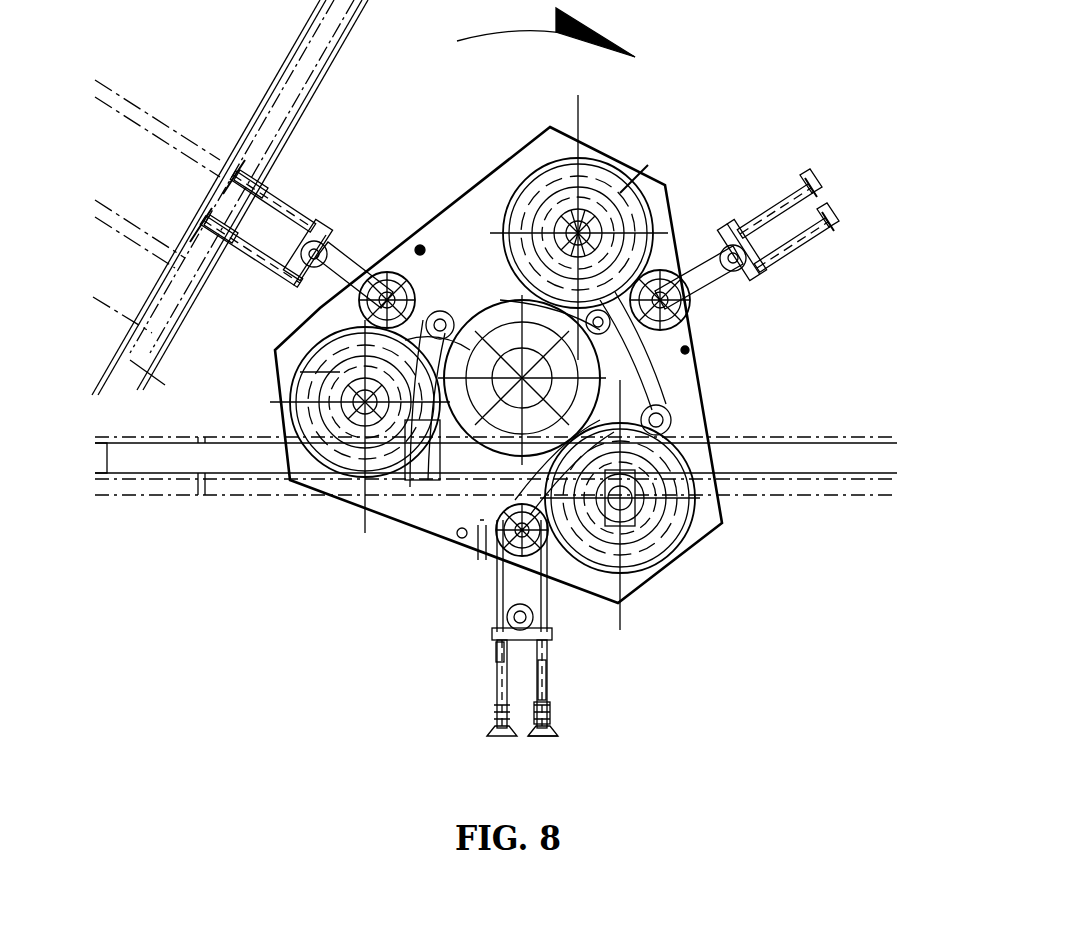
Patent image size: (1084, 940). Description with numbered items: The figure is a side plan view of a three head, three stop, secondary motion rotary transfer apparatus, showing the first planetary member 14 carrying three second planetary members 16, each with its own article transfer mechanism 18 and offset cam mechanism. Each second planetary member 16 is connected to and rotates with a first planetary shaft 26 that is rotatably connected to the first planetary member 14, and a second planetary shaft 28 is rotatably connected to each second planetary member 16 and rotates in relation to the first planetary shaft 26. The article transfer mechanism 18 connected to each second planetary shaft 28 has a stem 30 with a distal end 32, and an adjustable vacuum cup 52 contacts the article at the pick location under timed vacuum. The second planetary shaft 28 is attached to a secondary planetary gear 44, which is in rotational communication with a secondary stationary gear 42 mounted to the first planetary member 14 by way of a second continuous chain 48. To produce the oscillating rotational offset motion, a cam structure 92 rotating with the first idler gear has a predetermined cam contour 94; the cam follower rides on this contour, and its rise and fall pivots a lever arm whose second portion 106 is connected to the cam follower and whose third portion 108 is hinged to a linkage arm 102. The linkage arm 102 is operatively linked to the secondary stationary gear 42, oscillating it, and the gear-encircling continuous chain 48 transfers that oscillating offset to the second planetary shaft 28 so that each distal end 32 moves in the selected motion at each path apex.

The first planetary member 14 is at (446, 198).
The second planetary member 16 is at (306, 292).
The article transfer mechanism 18 is at (289, 196).
The first planetary shaft 26 is at (478, 516).
The second planetary shaft 28 is at (500, 645).
The stem 30 is at (550, 677).
The distal end 32 is at (550, 718).
The secondary stationary gear 42 is at (412, 566).
The secondary planetary gear 44 is at (328, 248).
The second continuous chain 48 is at (350, 250).
The adjustable vacuum cup 52 is at (543, 738).
The cam structure 92 is at (597, 160).
The cam contour 94 is at (622, 193).
The linkage arm 102 is at (420, 480).
The second portion 106 is at (654, 384).
The third portion 108 is at (666, 420).